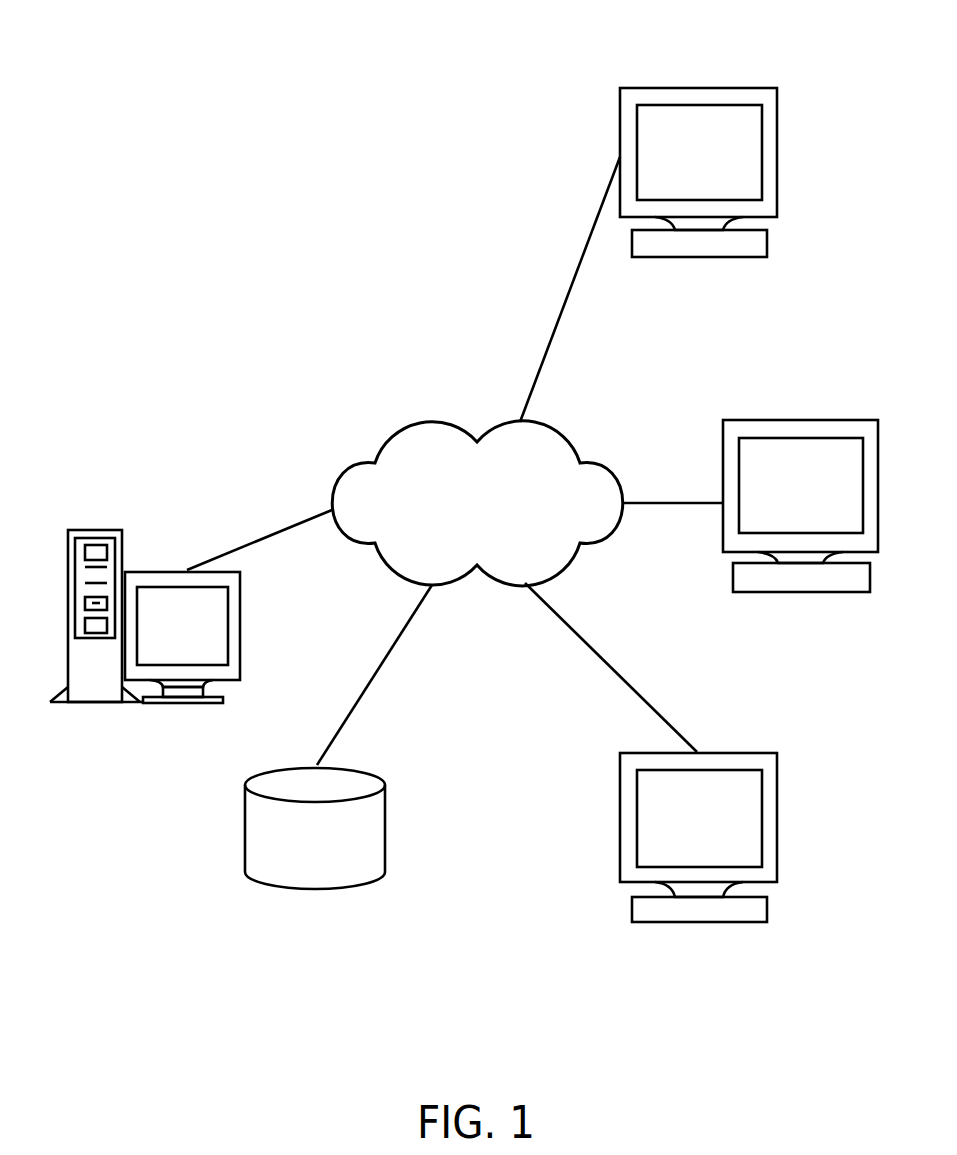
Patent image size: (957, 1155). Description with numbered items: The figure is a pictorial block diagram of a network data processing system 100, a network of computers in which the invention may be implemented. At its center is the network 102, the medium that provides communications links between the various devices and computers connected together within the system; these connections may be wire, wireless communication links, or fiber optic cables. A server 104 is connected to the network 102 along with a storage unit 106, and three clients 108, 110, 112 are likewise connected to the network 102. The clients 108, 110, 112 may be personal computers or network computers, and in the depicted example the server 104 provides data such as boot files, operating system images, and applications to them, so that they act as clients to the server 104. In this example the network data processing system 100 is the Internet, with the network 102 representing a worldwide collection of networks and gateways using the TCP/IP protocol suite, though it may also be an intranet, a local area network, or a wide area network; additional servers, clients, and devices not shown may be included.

The network data processing system 100 is at (520, 838).
The network 102 is at (425, 437).
The server 104 is at (153, 580).
The storage unit 106 is at (290, 873).
The client 108 is at (673, 98).
The client 110 is at (776, 428).
The client 112 is at (750, 912).